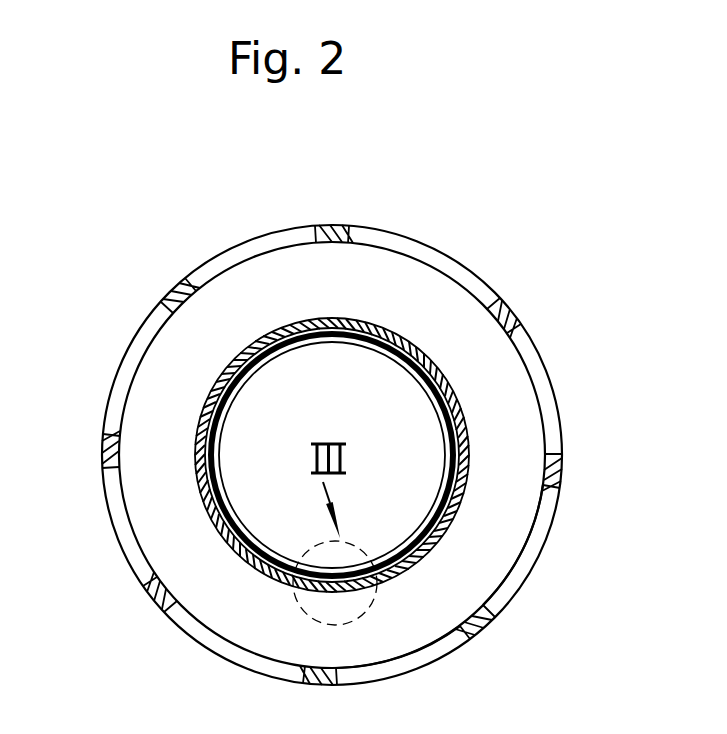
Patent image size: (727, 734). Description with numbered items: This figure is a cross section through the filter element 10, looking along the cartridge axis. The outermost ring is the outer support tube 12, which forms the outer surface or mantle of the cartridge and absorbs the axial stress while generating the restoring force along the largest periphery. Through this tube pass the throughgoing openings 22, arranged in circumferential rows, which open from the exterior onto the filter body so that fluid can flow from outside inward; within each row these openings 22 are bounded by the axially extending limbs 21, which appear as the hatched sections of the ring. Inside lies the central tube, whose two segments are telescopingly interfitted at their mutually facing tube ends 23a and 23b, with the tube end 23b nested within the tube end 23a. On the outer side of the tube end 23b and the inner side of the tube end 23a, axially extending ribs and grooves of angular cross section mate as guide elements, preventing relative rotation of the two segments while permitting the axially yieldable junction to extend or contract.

The filter element 10 is at (412, 214).
The outer support tube 12 is at (529, 310).
The axially extending limbs 21 is at (105, 443).
The throughgoing openings 22 is at (505, 587).
The tube end of tube segment 13a 23a is at (465, 417).
The tube end of tube segment 13b 23b is at (447, 531).